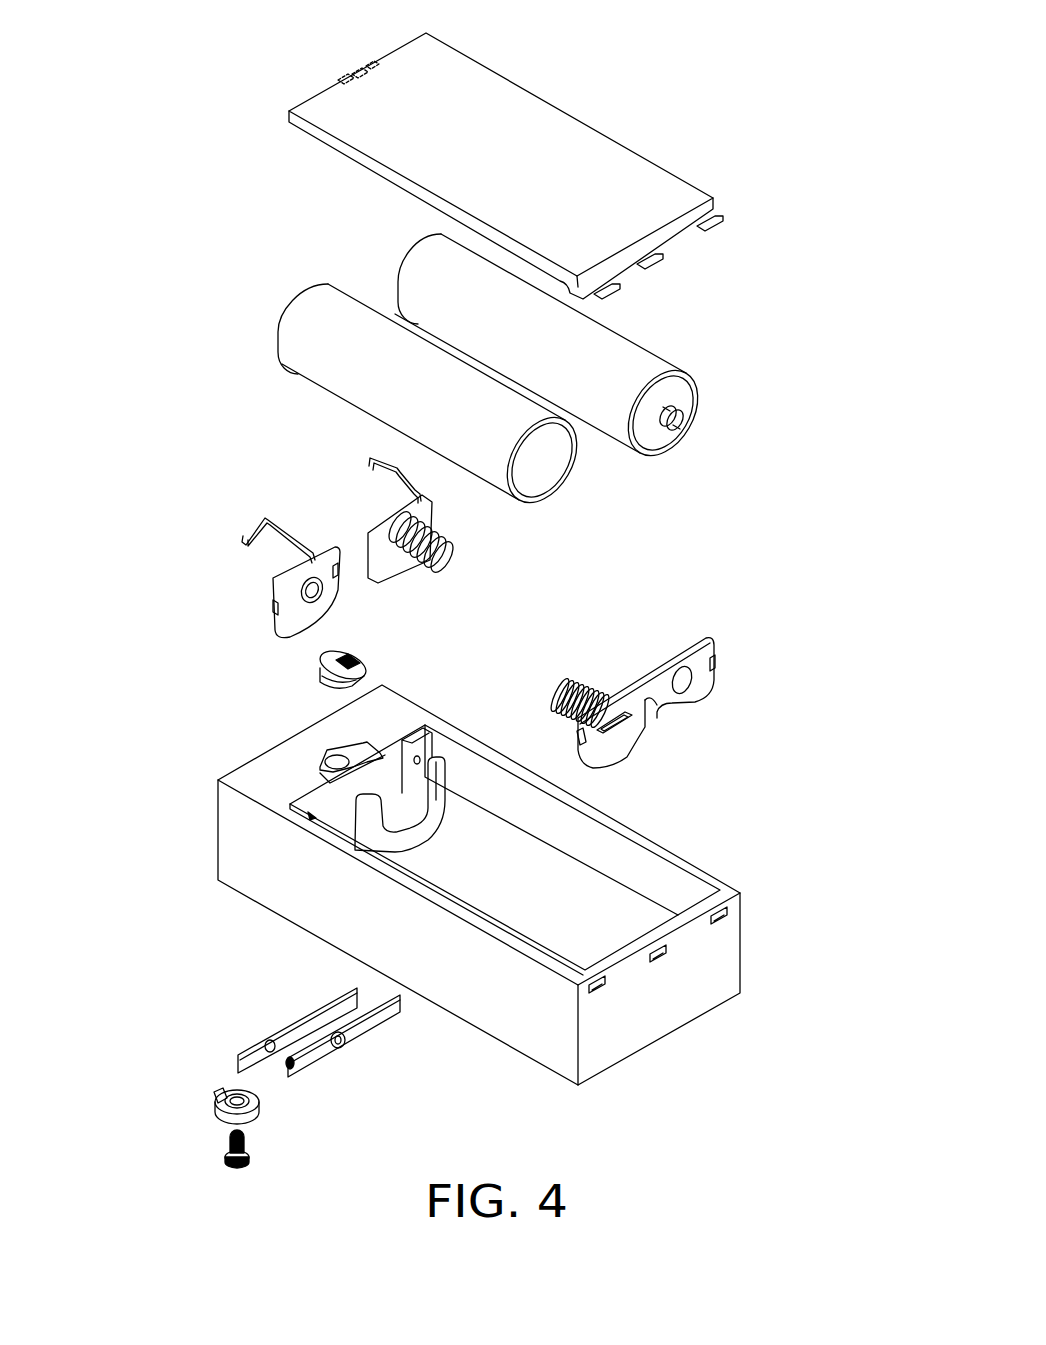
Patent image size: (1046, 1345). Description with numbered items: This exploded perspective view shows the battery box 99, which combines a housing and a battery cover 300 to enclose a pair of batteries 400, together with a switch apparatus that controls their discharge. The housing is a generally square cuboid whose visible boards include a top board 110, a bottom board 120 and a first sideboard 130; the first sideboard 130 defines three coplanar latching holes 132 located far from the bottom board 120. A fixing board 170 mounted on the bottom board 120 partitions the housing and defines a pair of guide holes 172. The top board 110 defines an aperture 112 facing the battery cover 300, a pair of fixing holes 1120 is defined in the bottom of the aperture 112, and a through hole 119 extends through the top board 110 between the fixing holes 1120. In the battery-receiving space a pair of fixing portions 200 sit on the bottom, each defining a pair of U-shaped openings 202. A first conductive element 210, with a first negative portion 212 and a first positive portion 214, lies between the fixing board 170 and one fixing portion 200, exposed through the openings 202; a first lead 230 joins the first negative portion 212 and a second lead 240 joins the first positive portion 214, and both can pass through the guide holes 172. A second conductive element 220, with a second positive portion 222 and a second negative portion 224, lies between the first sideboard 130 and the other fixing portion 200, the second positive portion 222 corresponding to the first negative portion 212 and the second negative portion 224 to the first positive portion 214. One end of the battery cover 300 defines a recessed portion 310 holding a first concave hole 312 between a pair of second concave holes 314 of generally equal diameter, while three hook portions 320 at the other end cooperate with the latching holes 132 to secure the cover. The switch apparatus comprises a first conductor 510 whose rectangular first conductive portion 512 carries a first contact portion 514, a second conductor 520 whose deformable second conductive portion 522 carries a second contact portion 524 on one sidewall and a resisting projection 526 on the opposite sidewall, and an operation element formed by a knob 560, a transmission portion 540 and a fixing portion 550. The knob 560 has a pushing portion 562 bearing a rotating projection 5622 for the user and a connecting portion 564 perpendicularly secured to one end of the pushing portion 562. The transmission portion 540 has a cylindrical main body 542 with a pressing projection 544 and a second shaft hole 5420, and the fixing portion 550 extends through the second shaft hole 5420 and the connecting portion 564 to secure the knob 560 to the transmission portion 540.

The battery box 99 is at (695, 89).
The top board 110 is at (280, 797).
The aperture 112 is at (303, 773).
The through hole 119 is at (322, 763).
The fixing holes 1120 is at (370, 750).
The bottom board 120 is at (591, 926).
The first sideboard 130 is at (668, 998).
The latching holes 132 is at (735, 918).
The fixing board 170 is at (313, 815).
The guide holes 172 is at (404, 793).
The fixing portions 200 is at (437, 777).
The U-shaped opening 202 is at (407, 770).
The first conductive element 210 is at (487, 602).
The first negative portion 212 is at (330, 600).
The first positive portion 214 is at (393, 568).
The second conductive element 220 is at (790, 710).
The second positive portion 222 is at (620, 740).
The second negative portion 224 is at (693, 697).
The first lead 230 is at (243, 538).
The second lead 240 is at (370, 455).
The battery cover 300 is at (542, 150).
The recessed portion 310 is at (282, 0).
The first concave hole 312 is at (357, 77).
The second concave holes 314 is at (371, 66).
The hook portions 320 is at (723, 218).
The batteries 400 is at (615, 363).
The first conductor 510 is at (205, 947).
The first conductive portion 512 is at (330, 1016).
The first contact portion 514 is at (262, 1043).
The second conductor 520 is at (448, 1068).
The second conductive portion 522 is at (380, 1017).
The second contact portion 524 is at (293, 1070).
The resisting projection 526 is at (345, 1047).
The transmission portion 540 is at (120, 1052).
The main body 542 is at (222, 1108).
The pressing projection 544 is at (218, 1097).
The second shaft hole 5420 is at (232, 1093).
The fixing portion 550 is at (230, 1155).
The knob 560 is at (210, 636).
The pushing portion 562 is at (330, 655).
The rotating projection 5622 is at (352, 656).
The connecting portion 564 is at (327, 683).